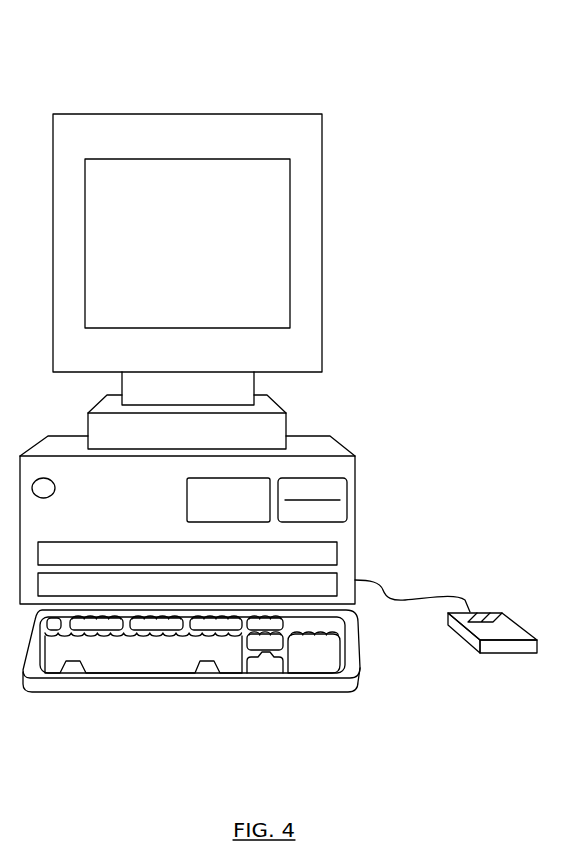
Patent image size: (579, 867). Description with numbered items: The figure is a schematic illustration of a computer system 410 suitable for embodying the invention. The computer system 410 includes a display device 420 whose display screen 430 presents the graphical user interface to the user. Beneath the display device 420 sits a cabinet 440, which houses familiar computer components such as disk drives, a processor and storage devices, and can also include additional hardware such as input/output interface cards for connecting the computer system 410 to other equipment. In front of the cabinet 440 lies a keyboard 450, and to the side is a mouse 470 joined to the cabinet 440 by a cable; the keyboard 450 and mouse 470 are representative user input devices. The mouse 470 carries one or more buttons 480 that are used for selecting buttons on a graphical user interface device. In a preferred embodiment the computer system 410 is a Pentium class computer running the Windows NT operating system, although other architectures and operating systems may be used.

The computer system 410 is at (343, 77).
The display device 420 is at (322, 275).
The display screen 430 is at (290, 187).
The cabinet 440 is at (317, 449).
The keyboard 450 is at (262, 692).
The mouse 470 is at (493, 647).
The buttons 480 is at (487, 615).